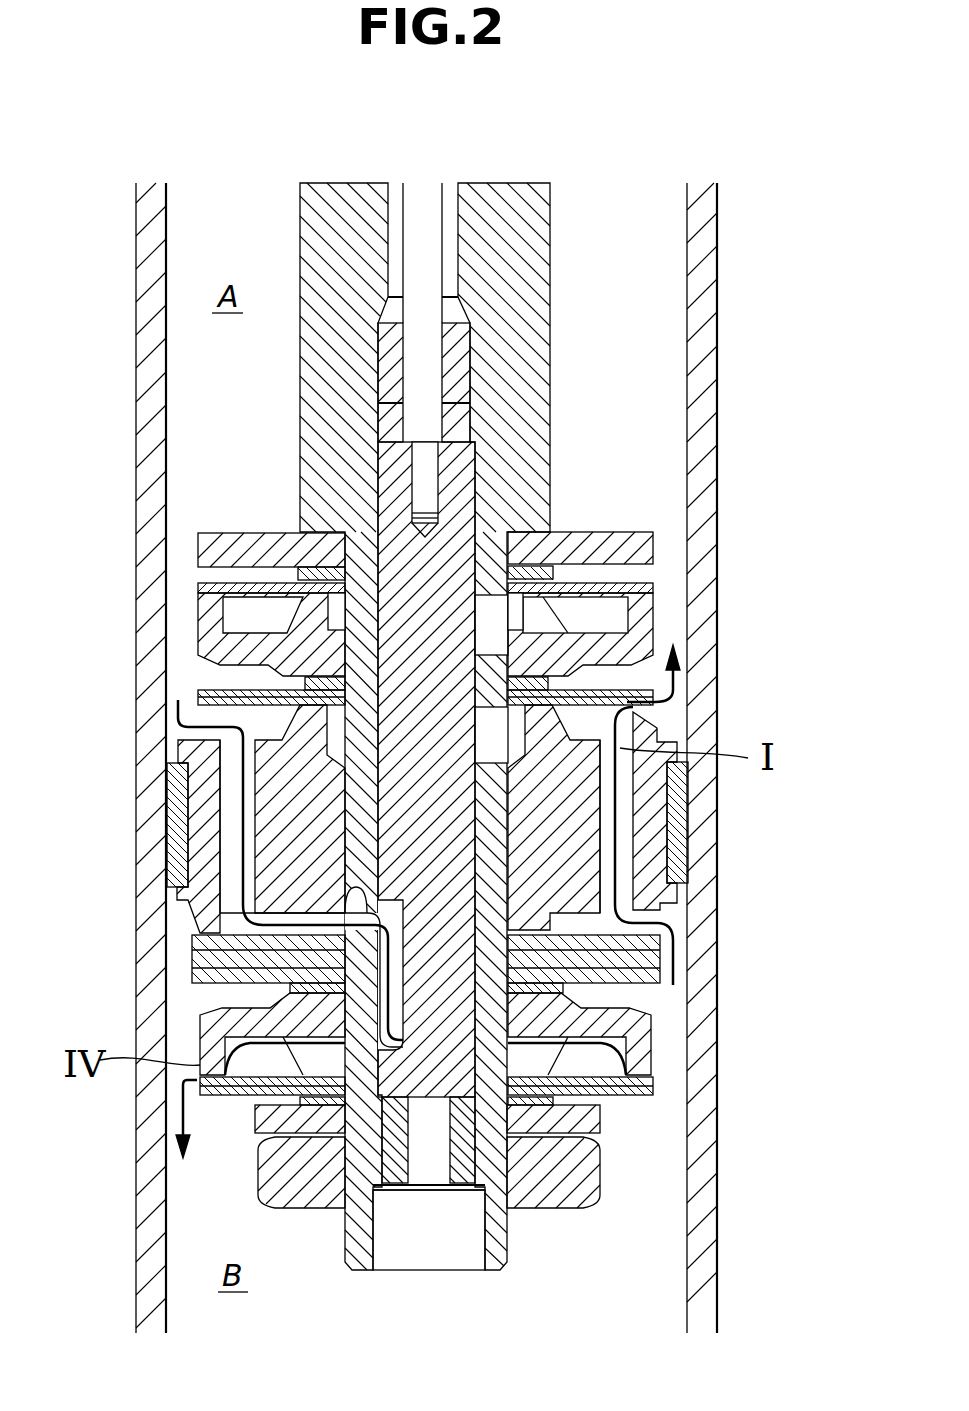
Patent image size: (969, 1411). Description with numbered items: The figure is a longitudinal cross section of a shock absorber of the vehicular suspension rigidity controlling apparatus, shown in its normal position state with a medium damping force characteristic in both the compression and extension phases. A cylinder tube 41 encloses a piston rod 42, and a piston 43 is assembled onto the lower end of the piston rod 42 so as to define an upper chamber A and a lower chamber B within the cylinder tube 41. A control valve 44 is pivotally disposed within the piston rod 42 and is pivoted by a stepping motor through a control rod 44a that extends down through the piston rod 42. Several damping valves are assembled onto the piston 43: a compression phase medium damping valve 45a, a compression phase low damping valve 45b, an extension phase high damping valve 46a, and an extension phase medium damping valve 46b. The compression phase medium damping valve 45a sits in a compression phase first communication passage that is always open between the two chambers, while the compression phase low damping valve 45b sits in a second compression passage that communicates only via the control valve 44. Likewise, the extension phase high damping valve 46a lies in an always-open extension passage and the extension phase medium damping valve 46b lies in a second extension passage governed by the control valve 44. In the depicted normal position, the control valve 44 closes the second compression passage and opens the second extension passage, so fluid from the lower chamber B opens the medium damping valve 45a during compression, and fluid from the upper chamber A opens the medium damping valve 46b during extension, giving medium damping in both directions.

The cylinder tube 41 is at (145, 236).
The piston rod 42 is at (525, 275).
The piston 43 is at (655, 805).
The control valve 44 is at (450, 515).
The control rod 44a is at (412, 242).
The compression phase medium damping valve 45a is at (650, 690).
The compression phase low damping valve 45b is at (655, 585).
The extension phase high damping valve 46a is at (200, 975).
The extension phase medium damping valve 46b is at (230, 1105).